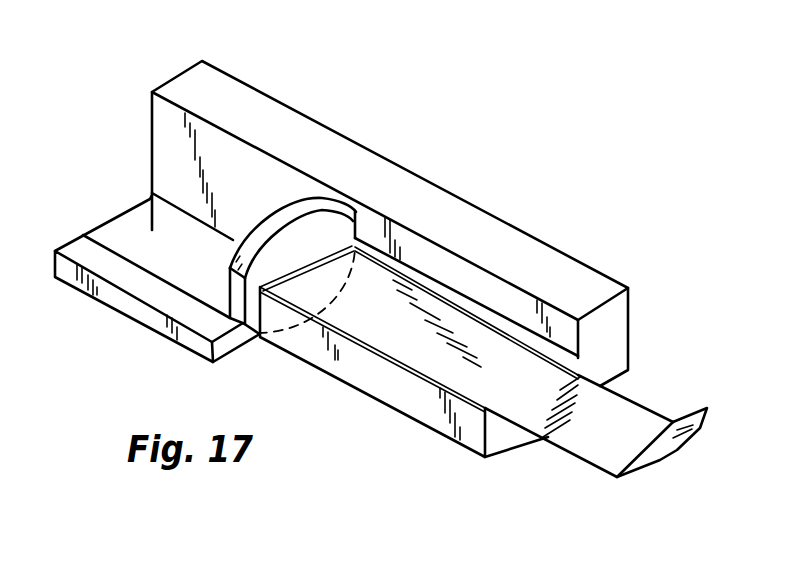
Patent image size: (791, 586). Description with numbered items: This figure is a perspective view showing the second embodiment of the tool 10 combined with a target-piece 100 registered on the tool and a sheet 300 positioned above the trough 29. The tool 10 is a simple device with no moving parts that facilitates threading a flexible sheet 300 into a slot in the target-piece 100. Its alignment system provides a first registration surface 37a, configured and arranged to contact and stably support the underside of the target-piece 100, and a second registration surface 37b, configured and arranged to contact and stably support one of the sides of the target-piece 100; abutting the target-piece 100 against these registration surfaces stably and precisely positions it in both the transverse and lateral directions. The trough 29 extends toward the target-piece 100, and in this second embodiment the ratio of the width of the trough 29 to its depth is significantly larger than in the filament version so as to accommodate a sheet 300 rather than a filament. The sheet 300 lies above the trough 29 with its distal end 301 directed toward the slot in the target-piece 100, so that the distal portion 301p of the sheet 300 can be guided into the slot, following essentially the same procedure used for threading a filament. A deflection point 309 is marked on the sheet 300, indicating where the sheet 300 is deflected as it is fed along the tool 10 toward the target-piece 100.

The tool 10 is at (411, 59).
The first registration surface 37a is at (128, 230).
The second registration surface 37b is at (150, 205).
The target-piece 100 is at (340, 224).
The trough 29 is at (378, 311).
The distal end of sheet 301 is at (503, 350).
The distal portion of sheet 301p is at (507, 393).
The sheet 300 is at (639, 419).
The deflection point 309 is at (616, 477).